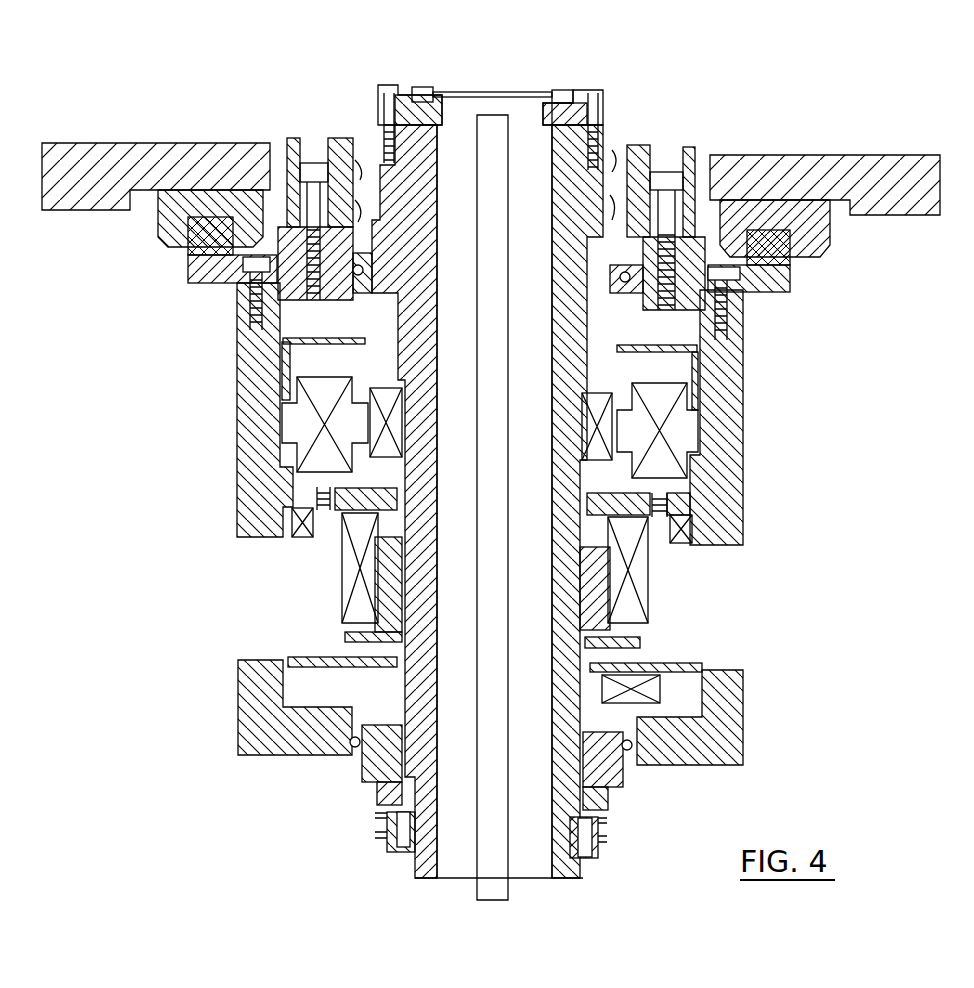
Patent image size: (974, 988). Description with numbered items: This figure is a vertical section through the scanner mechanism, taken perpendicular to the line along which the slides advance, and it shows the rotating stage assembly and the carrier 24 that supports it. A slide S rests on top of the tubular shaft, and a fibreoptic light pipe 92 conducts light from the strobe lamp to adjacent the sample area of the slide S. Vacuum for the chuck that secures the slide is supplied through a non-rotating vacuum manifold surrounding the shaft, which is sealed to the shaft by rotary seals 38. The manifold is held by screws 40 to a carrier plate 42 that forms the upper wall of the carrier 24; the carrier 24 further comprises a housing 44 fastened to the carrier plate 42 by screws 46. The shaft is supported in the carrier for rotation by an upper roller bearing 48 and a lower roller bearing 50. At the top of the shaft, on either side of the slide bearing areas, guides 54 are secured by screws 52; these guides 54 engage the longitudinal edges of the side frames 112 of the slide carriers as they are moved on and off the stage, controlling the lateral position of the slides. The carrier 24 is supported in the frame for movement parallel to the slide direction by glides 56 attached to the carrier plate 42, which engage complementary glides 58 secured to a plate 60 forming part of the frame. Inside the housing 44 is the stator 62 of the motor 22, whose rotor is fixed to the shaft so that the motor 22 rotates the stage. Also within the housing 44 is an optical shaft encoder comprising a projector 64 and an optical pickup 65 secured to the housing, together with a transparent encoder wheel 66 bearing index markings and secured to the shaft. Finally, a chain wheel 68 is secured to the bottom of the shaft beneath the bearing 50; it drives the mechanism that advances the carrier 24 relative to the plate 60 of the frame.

The motor 22 is at (665, 373).
The carrier 24 is at (238, 591).
The rotary seals 38 is at (380, 221).
The screws 40 is at (313, 170).
The carrier plate 42 is at (205, 283).
The housing 44 is at (237, 440).
The screws 46 is at (250, 310).
The roller bearing 48 is at (358, 280).
The roller bearing 50 is at (630, 752).
The screws 52 is at (388, 88).
The guides 54 is at (410, 95).
The glides 56 is at (195, 240).
The complementary glides 58 is at (165, 222).
The plate 60 is at (170, 143).
The stator 62 is at (685, 435).
The projector 64 is at (650, 690).
The optical pickup 65 is at (690, 664).
The encoder wheel 66 is at (640, 641).
The chain wheel 68 is at (600, 829).
The fibreoptic light pipe 92 is at (510, 882).
The side frames 112 is at (428, 87).
The slide S is at (493, 92).